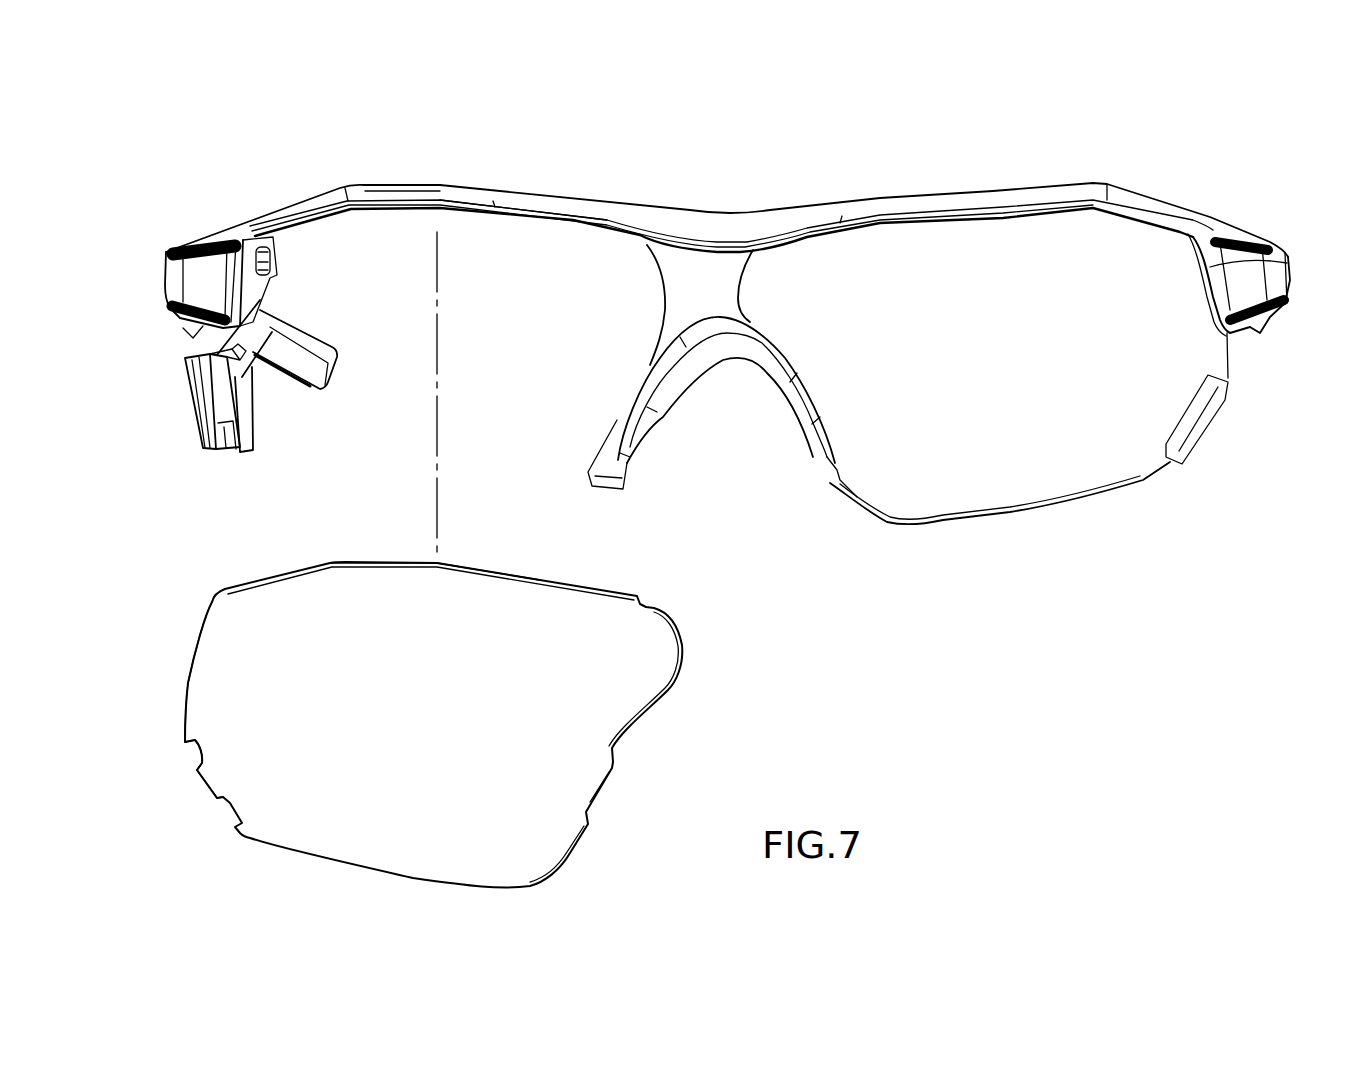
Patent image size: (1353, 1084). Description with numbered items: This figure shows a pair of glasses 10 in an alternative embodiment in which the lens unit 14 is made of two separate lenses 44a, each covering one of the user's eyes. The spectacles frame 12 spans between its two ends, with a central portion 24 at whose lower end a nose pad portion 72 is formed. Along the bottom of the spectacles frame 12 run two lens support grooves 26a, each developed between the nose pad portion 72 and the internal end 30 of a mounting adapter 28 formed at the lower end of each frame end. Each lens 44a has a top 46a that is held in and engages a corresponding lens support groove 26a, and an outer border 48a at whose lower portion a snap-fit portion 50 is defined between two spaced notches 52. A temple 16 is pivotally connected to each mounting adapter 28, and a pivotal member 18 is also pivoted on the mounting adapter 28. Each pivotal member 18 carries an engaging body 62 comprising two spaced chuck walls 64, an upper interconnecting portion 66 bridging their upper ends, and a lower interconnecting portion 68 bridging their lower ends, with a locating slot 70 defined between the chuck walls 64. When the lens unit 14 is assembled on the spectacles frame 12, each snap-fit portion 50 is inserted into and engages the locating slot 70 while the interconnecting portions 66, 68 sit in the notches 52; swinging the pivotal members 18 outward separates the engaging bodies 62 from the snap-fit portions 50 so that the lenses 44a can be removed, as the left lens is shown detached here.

The glasses 10 is at (865, 633).
The spectacles frame 12 is at (98, 203).
The lens unit 14 is at (1106, 520).
The temple 16 is at (306, 328).
The pivotal member 18 is at (260, 408).
The central portion 24 is at (728, 240).
The lens support groove 26a is at (552, 225).
The mounting adapter 28 is at (213, 265).
The internal end 30 is at (1287, 267).
The lens 44a is at (610, 715).
The top 46a is at (530, 598).
The outer border 48a is at (217, 657).
The snap-fit portion 50 is at (220, 788).
The notch 52 is at (195, 748).
The engaging body 62 is at (190, 392).
The chuck wall 64 is at (195, 415).
The upper interconnecting portion 66 is at (193, 354).
The lower interconnecting portion 68 is at (225, 455).
The locating slot 70 is at (250, 455).
The nose pad portion 72 is at (658, 407).